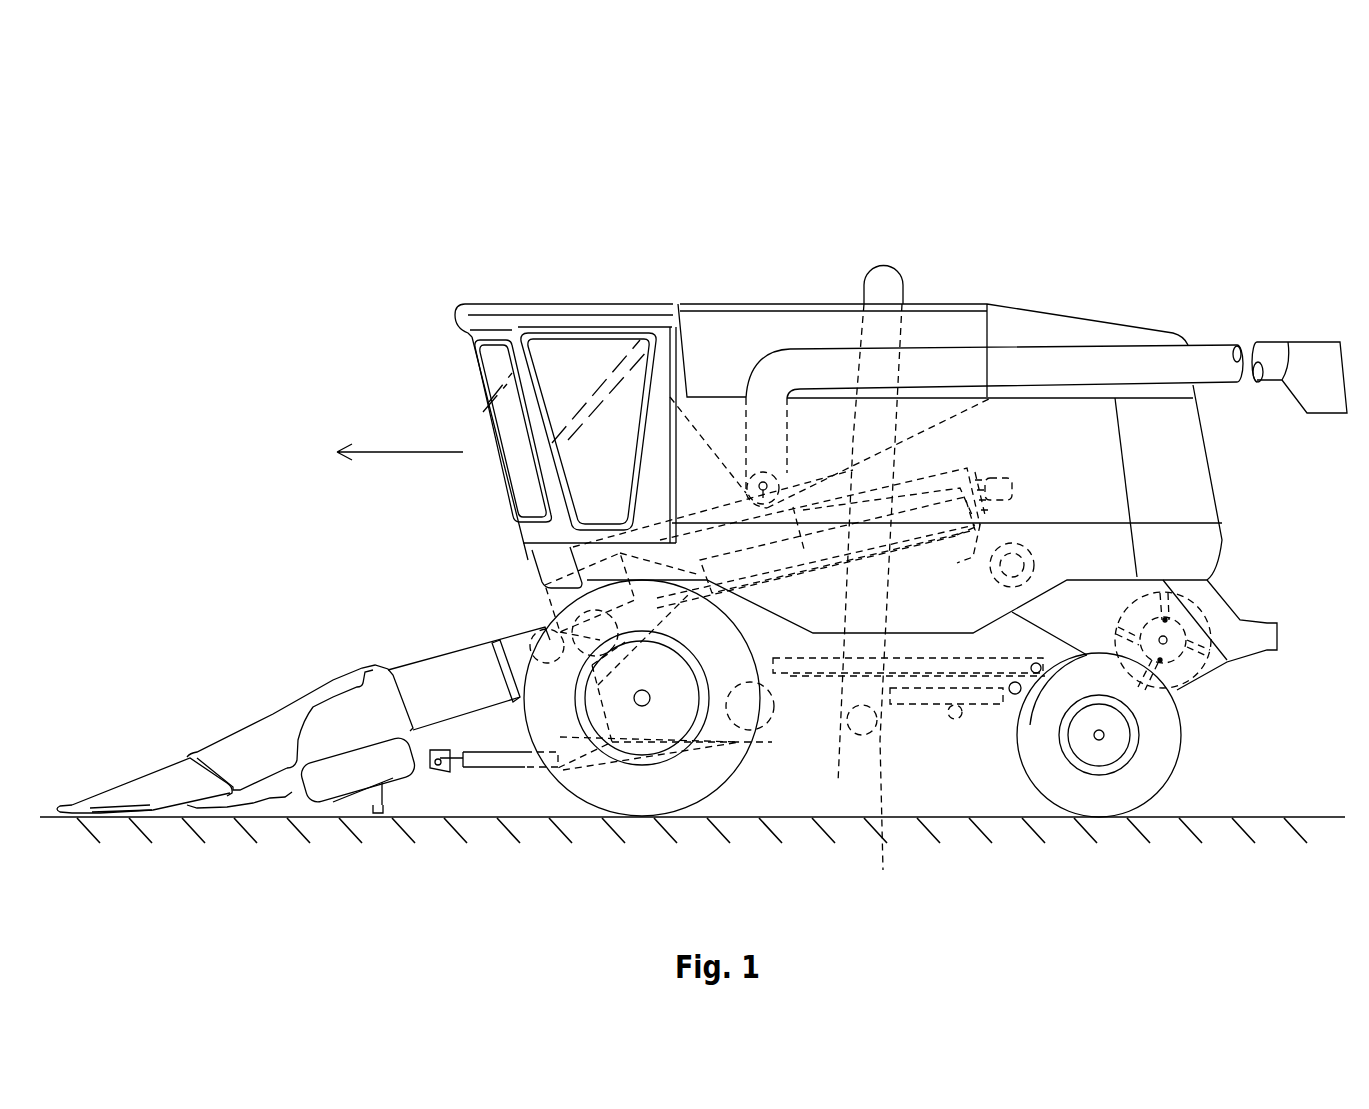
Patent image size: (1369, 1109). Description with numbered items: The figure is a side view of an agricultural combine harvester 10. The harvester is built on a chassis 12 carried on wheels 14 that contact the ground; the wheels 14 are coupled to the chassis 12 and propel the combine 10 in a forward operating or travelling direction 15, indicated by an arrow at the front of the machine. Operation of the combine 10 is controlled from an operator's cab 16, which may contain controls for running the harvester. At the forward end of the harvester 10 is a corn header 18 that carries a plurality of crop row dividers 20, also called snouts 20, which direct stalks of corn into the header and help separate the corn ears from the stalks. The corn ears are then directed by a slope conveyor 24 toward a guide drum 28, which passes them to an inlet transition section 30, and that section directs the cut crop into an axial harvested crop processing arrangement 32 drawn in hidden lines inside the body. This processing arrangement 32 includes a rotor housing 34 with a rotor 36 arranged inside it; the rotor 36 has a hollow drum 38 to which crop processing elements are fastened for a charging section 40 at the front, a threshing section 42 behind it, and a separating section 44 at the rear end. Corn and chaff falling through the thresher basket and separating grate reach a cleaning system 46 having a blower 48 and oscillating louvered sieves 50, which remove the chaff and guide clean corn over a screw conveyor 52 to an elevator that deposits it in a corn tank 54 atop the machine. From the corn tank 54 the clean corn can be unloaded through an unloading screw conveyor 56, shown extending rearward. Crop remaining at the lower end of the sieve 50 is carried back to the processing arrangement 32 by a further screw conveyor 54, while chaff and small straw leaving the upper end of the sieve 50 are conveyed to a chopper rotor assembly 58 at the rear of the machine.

The agricultural combine harvester 10 is at (1028, 172).
The chassis 12 is at (1003, 732).
The wheels 14 is at (588, 797).
The forward operating or travelling direction 15 is at (400, 452).
The operator's cab 16 is at (580, 360).
The corn header 18 is at (247, 660).
The crop row dividers 20 is at (150, 778).
The slope conveyor 24 is at (445, 695).
The guide drum 28 is at (530, 632).
The inlet transition section 30 is at (560, 590).
The axial harvested crop processing arrangement 32 is at (952, 450).
The rotor housing 34 is at (797, 632).
The rotor 36 is at (783, 700).
The hollow drum 38 is at (1012, 490).
The charging section 40 is at (573, 547).
The threshing section 42 is at (705, 515).
The separating section 44 is at (921, 478).
The cleaning system 46 is at (905, 745).
The blower 48 is at (770, 713).
The sieves 50 is at (936, 700).
The screw conveyor 52 is at (883, 586).
The corn tank 54 is at (740, 364).
The unloading screw conveyor 56 is at (1207, 350).
The chopper rotor assembly 58 is at (1150, 660).